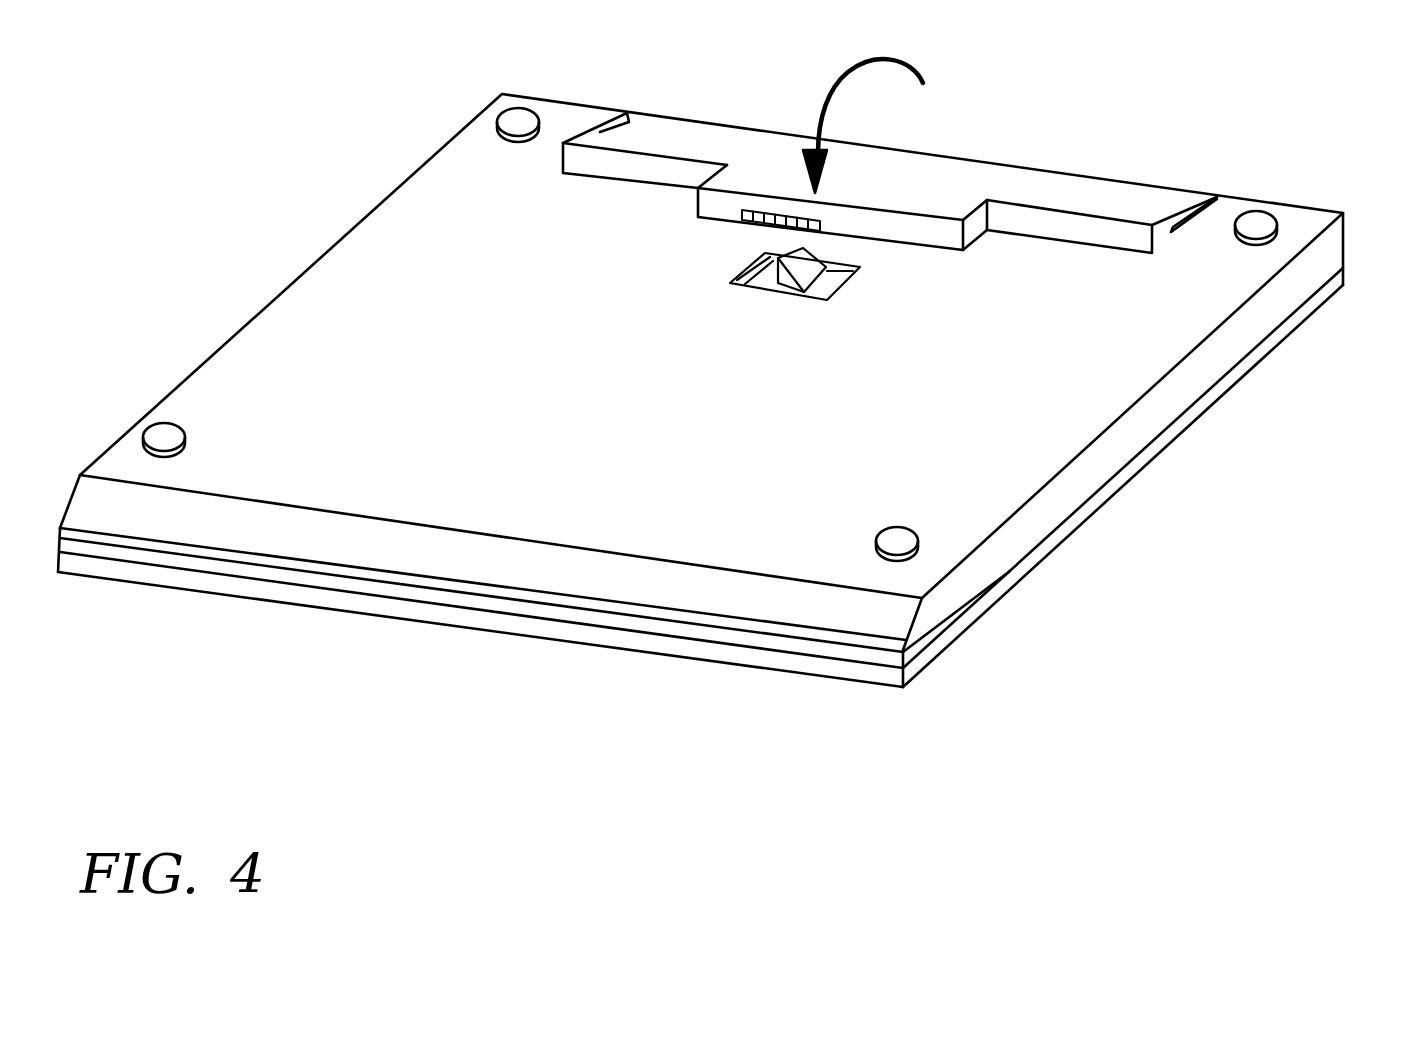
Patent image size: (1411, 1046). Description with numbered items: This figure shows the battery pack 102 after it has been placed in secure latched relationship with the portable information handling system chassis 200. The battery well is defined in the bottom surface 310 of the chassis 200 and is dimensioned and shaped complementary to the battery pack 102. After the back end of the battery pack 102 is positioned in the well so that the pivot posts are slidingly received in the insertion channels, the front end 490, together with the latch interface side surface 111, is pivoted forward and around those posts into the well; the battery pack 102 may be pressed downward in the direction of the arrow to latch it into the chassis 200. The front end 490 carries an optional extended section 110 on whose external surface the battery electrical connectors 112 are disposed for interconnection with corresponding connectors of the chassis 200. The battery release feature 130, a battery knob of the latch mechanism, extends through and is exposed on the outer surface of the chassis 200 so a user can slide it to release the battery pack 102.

The portable information handling system chassis 200 is at (1280, 305).
The latch interface side surface 111 is at (610, 165).
The battery pack 102 is at (682, 140).
The front end 490 is at (903, 227).
The battery electrical connectors 112 is at (770, 210).
The extended section 110 is at (990, 203).
The bottom surface 310 is at (1222, 216).
The battery release feature 130 is at (749, 267).